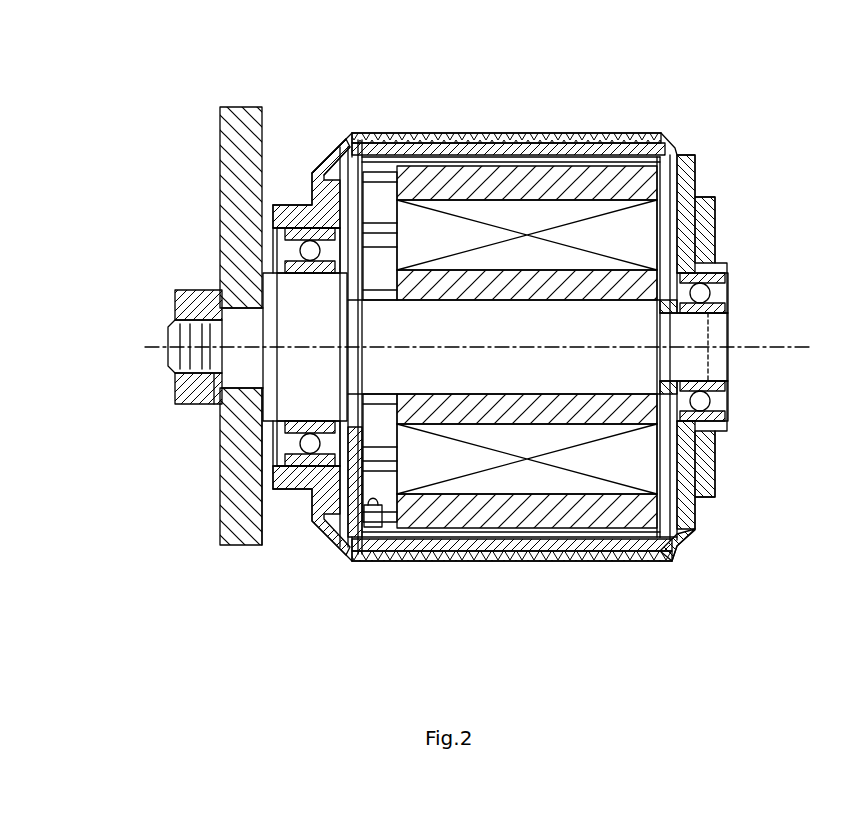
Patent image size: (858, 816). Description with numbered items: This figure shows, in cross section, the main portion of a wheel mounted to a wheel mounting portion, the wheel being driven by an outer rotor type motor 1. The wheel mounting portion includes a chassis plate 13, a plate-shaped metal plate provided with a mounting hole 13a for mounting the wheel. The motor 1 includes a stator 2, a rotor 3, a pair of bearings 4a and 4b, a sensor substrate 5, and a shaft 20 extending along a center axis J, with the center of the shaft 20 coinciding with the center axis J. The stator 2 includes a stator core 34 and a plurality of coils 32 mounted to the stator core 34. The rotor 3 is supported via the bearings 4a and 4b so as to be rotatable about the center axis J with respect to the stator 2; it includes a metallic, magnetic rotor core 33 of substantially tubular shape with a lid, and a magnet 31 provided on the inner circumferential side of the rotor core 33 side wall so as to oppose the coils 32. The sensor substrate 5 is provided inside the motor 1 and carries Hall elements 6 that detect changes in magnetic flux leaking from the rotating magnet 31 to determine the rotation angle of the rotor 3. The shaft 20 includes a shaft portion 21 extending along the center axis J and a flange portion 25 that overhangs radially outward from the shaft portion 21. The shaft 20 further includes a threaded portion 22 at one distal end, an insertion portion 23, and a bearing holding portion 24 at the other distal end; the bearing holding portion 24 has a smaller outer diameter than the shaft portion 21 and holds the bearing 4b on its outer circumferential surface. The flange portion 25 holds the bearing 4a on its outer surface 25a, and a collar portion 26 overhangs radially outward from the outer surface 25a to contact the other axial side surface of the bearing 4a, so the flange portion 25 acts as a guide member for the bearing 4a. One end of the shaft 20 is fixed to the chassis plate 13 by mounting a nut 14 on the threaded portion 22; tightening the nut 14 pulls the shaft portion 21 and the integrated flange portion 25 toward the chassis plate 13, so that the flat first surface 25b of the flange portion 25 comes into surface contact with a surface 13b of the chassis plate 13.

The motor 1 is at (790, 75).
The stator 2 is at (448, 162).
The rotor 3 is at (719, 198).
The bearing 4a is at (307, 468).
The bearing 4b is at (733, 275).
The sensor substrate 5 is at (358, 541).
The Hall element 6 is at (378, 526).
The chassis plate 13 is at (223, 150).
The mounting hole 13a is at (214, 381).
The surface 13b is at (263, 412).
The nut 14 is at (215, 398).
The shaft 20 is at (283, 288).
The shaft portion 21 is at (640, 268).
The threaded portion 22 is at (181, 337).
The insertion portion 23 is at (188, 302).
The bearing holding portion 24 is at (693, 334).
The flange portion 25 is at (244, 298).
The outer surface 25a is at (300, 228).
The first surface 25b is at (262, 406).
The collar portion 26 is at (337, 186).
The magnet 31 is at (511, 133).
The coil 32 is at (650, 520).
The rotor core 33 is at (572, 143).
The stator core 34 is at (650, 472).
The center axis J is at (803, 347).